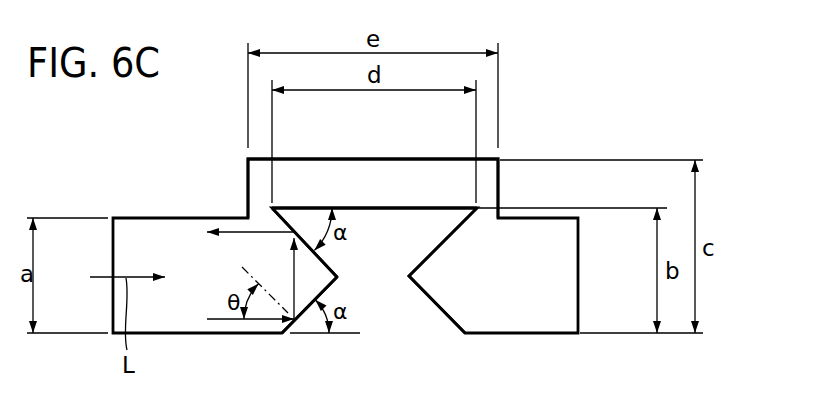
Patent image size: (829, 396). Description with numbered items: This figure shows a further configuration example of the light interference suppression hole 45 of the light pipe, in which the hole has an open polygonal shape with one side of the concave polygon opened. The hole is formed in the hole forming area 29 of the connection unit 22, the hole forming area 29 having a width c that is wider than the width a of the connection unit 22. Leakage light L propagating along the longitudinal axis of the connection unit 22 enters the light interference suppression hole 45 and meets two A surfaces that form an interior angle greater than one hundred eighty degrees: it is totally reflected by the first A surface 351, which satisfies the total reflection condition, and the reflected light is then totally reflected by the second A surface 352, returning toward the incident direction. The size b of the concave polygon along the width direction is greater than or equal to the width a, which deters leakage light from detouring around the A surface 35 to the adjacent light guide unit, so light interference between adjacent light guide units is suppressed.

The connection unit 22 is at (155, 218).
The hole forming area 29 is at (422, 177).
The light interference suppression hole 45 is at (383, 213).
The A surface 35 is at (428, 257).
The first A surface 351 is at (328, 286).
The second A surface 352 is at (290, 226).